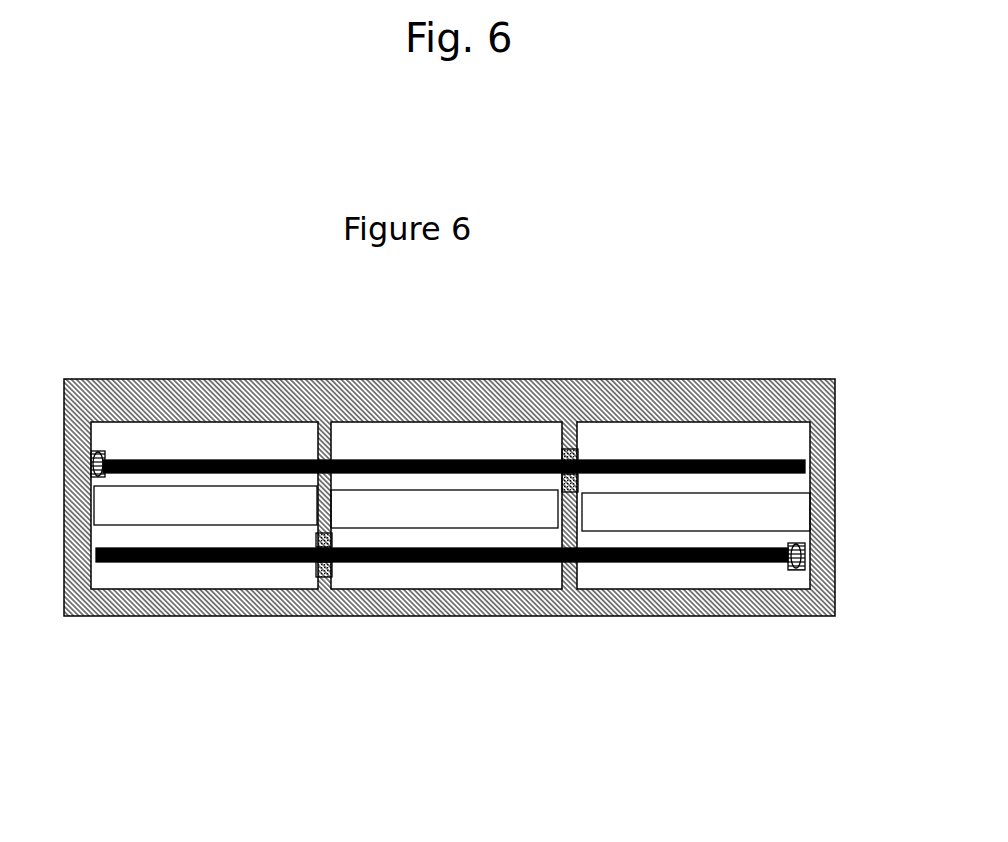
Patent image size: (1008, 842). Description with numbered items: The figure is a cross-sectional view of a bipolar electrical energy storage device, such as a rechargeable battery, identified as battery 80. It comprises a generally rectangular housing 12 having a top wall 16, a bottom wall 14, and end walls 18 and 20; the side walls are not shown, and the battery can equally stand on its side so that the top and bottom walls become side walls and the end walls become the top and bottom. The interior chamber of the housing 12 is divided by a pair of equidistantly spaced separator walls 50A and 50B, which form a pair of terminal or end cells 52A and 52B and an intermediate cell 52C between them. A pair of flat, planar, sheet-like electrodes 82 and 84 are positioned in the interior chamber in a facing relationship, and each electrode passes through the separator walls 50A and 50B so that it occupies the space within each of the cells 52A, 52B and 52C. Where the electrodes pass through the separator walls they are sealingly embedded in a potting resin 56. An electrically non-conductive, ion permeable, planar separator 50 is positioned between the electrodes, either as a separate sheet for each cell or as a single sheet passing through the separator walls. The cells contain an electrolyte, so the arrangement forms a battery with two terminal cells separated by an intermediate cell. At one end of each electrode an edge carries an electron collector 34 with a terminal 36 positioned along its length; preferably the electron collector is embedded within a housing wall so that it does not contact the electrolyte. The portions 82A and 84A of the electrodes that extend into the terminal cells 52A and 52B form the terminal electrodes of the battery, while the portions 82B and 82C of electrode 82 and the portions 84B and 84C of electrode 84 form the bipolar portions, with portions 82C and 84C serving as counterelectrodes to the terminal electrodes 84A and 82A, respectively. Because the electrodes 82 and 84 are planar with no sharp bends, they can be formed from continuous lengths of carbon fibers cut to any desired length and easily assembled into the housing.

The housing 12 is at (569, 381).
The bottom wall 14 is at (328, 605).
The top wall 16 is at (805, 398).
The end wall 18 is at (68, 466).
The end wall 20 is at (822, 445).
The electron collector 34 is at (107, 477).
The terminal 36 is at (105, 458).
The separator 50 is at (793, 518).
The separator wall 50A is at (313, 437).
The separator wall 50B is at (578, 438).
The terminal cell 52A is at (293, 575).
The terminal cell 52B is at (685, 580).
The intermediate cell 52C is at (483, 575).
The potting resin 56 is at (332, 535).
The battery 80 is at (714, 305).
The electrode 82 is at (523, 460).
The terminal electrode portion 82A is at (138, 461).
The bipolar electrode portion 82B is at (390, 461).
The bipolar electrode portion 82C is at (733, 461).
The electrode 84 is at (191, 562).
The terminal electrode portion 84A is at (727, 563).
The bipolar electrode portion 84B is at (427, 563).
The bipolar electrode portion 84C is at (253, 563).